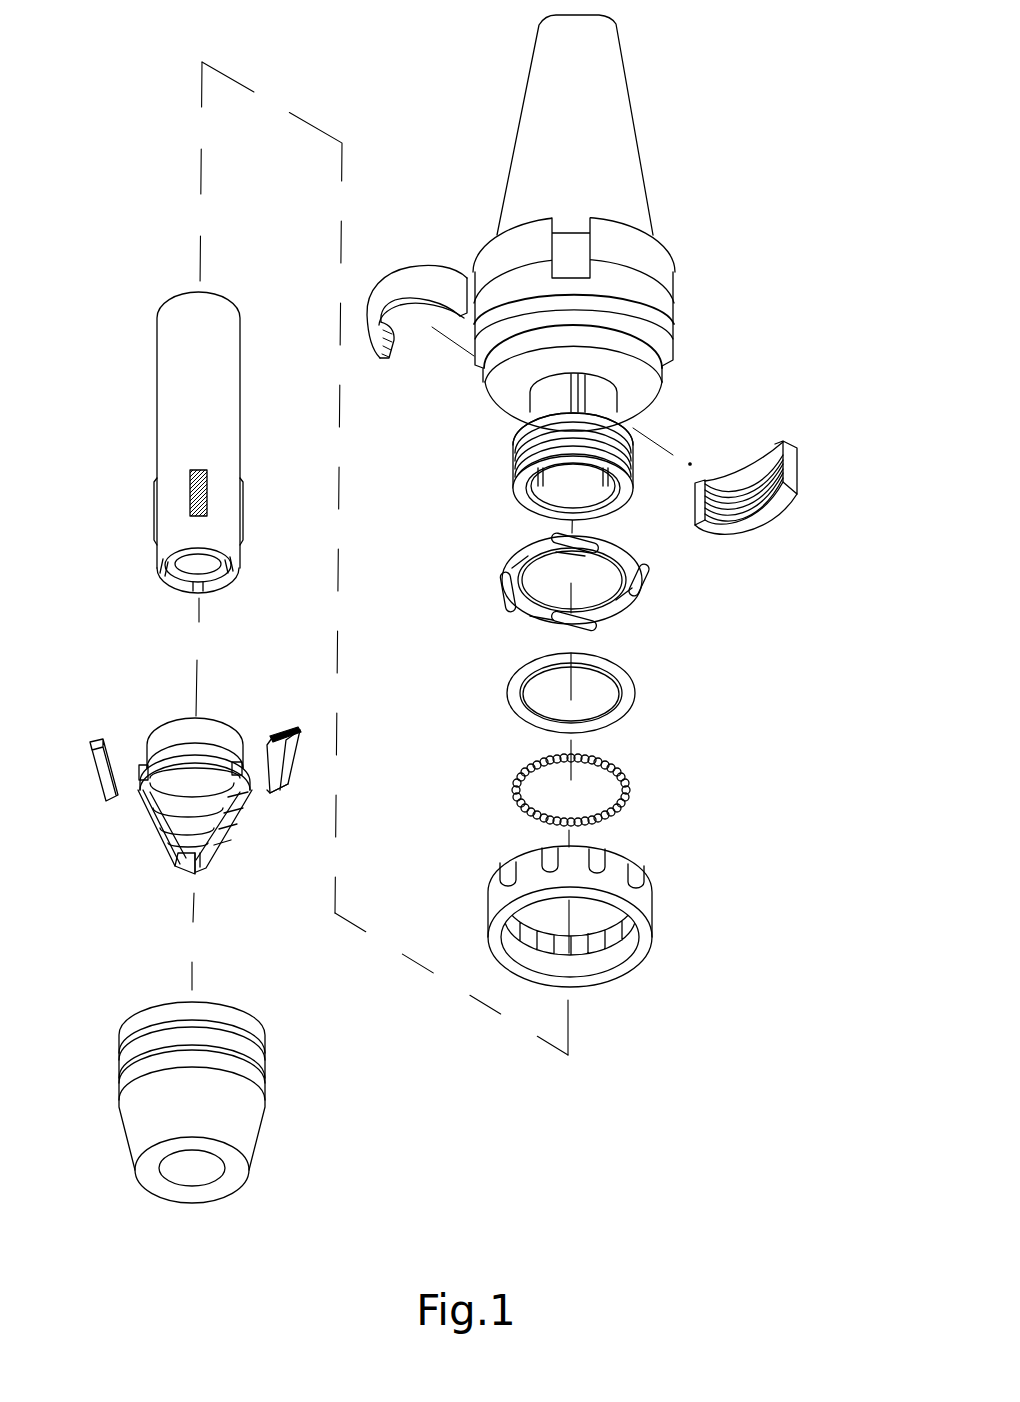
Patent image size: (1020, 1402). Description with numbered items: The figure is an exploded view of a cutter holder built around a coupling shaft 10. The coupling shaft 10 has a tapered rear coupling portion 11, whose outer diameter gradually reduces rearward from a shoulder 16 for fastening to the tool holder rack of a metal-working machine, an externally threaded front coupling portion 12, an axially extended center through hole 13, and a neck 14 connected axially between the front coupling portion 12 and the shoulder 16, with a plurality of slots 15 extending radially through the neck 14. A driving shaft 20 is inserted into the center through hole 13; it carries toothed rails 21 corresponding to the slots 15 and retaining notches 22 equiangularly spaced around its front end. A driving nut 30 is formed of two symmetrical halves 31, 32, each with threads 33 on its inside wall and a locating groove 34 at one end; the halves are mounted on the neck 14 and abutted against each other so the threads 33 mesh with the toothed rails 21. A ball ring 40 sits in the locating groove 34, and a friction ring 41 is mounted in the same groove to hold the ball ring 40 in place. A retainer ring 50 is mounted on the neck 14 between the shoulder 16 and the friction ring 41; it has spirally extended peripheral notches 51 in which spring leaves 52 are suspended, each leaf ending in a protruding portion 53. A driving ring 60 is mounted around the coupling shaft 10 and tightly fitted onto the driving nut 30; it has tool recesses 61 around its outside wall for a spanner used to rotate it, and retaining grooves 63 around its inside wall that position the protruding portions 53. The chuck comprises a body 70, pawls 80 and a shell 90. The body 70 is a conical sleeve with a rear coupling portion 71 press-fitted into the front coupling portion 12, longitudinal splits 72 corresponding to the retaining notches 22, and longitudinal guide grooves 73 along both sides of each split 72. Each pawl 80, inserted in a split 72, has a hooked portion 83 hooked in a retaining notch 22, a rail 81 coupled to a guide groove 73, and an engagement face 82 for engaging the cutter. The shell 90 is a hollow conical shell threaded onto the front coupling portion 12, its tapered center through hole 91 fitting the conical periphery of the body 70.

The coupling shaft 10 is at (599, 274).
The tapered rear coupling portion 11 is at (622, 121).
The externally threaded front coupling portion 12 is at (637, 477).
The axially extended center through hole 13 is at (558, 476).
The neck 14 is at (524, 421).
The slots 15 is at (573, 395).
The shoulder 16 is at (535, 390).
The driving shaft 20 is at (199, 442).
The toothed rails 21 is at (208, 492).
The retaining notches 22 is at (232, 555).
The driving nut 30 is at (787, 490).
The symmetrical half 31 is at (780, 520).
The symmetrical half 32 is at (372, 323).
The threads 33 is at (735, 519).
The locating groove 34 is at (773, 449).
The ball ring 40 is at (630, 790).
The friction ring 41 is at (632, 697).
The retainer ring 50 is at (593, 598).
The spirally extended peripheral notches 51 is at (650, 581).
The spring leaves 52 is at (556, 626).
The protruding portion 53 is at (510, 606).
The driving ring 60 is at (604, 928).
The tool recesses 61 is at (632, 876).
The retaining grooves 63 is at (615, 945).
The body 70 is at (229, 798).
The rear coupling portion 71 is at (170, 716).
The longitudinal splits 72 is at (230, 855).
The longitudinal guide grooves 73 is at (203, 870).
The pawls 80 is at (239, 756).
The rail 81 is at (300, 765).
The engagement face 82 is at (278, 793).
The hooked portion 83 is at (274, 735).
The shell 90 is at (242, 1103).
The tapered center through hole 91 is at (228, 1190).